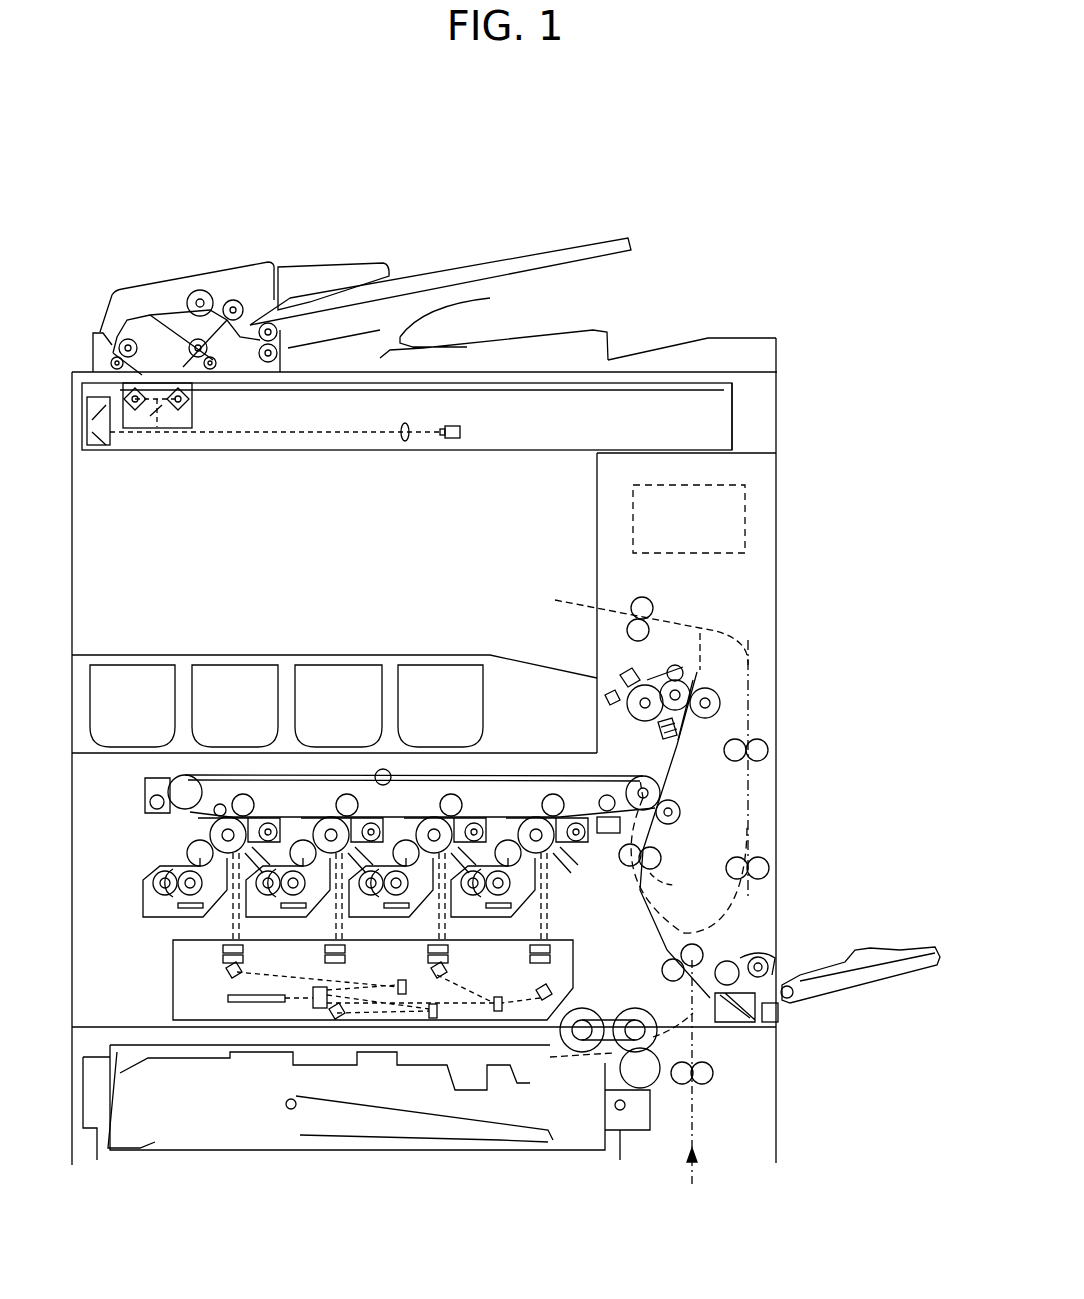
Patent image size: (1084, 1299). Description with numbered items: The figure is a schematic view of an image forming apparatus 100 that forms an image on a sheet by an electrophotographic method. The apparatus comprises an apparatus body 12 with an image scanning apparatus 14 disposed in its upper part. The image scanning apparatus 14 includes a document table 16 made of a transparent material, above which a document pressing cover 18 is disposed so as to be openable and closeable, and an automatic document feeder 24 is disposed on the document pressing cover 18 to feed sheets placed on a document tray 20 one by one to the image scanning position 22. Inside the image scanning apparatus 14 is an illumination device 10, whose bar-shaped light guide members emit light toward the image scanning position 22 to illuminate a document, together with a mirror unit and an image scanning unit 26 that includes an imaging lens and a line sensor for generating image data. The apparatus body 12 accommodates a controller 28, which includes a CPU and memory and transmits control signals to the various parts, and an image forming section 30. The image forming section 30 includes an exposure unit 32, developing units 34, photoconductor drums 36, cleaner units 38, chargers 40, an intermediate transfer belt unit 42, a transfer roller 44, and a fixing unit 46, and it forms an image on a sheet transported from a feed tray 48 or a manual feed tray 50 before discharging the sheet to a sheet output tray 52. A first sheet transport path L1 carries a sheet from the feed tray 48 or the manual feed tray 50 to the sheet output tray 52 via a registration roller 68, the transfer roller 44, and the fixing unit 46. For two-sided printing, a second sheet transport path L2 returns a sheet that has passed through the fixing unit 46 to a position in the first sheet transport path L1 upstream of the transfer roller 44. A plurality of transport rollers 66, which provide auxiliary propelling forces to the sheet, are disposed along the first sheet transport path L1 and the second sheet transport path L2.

The image forming apparatus 100 is at (185, 130).
The illumination device 10 is at (199, 401).
The apparatus body 12 is at (777, 528).
The image scanning apparatus 14 is at (782, 399).
The document table 16 is at (584, 385).
The document pressing cover 18 is at (90, 357).
The document tray 20 is at (472, 262).
The image scanning position 22 is at (158, 380).
The automatic document feeder 24 is at (282, 264).
The image scanning unit 26 is at (469, 404).
The controller 28 is at (745, 493).
The image forming section 30 is at (547, 903).
The exposure unit 32 is at (212, 1000).
The developing units 34 is at (188, 856).
The photoconductor drums 36 is at (218, 833).
The cleaner units 38 is at (288, 816).
The chargers 40 is at (237, 900).
The intermediate transfer belt unit 42 is at (548, 772).
The transfer roller 44 is at (682, 812).
The fixing unit 46 is at (727, 713).
The feed tray 48 is at (382, 1115).
The manual feed tray 50 is at (898, 965).
The sheet output tray 52 is at (223, 655).
The transport rollers 66 is at (630, 605).
The registration roller 68 is at (665, 883).
The first sheet transport path L1 is at (668, 835).
The second sheet transport path L2 is at (752, 808).